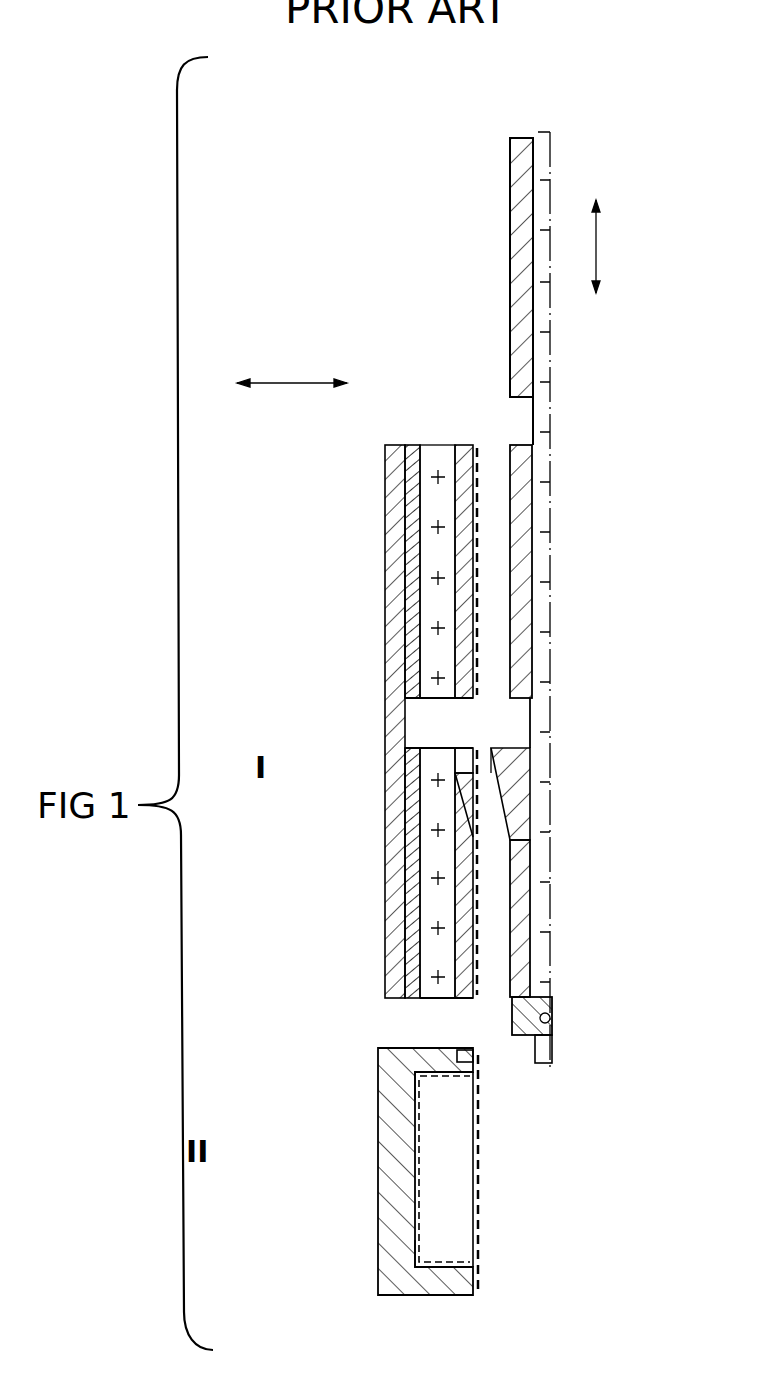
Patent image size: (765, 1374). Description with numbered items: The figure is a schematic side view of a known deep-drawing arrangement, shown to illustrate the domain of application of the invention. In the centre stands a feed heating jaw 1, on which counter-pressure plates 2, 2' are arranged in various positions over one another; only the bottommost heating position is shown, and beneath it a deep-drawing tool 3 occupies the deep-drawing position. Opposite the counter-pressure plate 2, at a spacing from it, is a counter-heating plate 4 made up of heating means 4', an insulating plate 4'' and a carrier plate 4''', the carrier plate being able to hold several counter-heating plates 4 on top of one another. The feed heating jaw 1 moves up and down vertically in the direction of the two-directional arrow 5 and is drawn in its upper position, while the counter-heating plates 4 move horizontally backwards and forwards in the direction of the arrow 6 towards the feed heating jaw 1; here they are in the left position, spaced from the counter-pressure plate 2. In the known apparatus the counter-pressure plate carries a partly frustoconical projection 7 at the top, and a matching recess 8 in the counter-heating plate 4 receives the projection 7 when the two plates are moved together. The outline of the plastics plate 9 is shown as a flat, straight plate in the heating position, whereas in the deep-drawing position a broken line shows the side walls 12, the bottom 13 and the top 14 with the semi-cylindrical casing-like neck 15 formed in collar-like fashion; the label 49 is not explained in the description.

The feed heating jaw 1 is at (550, 413).
The counter-pressure plate 2 is at (572, 880).
The counter-pressure plate 2' is at (592, 571).
The deep-drawing tool 3 is at (393, 1183).
The counter-heating plate 4 is at (382, 721).
The heating means 4' is at (390, 721).
The insulating plate 4'' is at (372, 571).
The carrier plate 4''' is at (360, 873).
The two-directional arrow 5 is at (597, 248).
The arrow 6 is at (280, 383).
The partly frustoconical projection 7 is at (505, 785).
The recess 8 is at (462, 762).
The plastics plate 9 is at (477, 527).
The side walls 12 is at (456, 1262).
The bottom 13 is at (407, 1263).
The top 14 is at (417, 1070).
The semi-cylindrical casing-like neck 15 is at (472, 1050).
The upper chamber 49 is at (456, 1138).